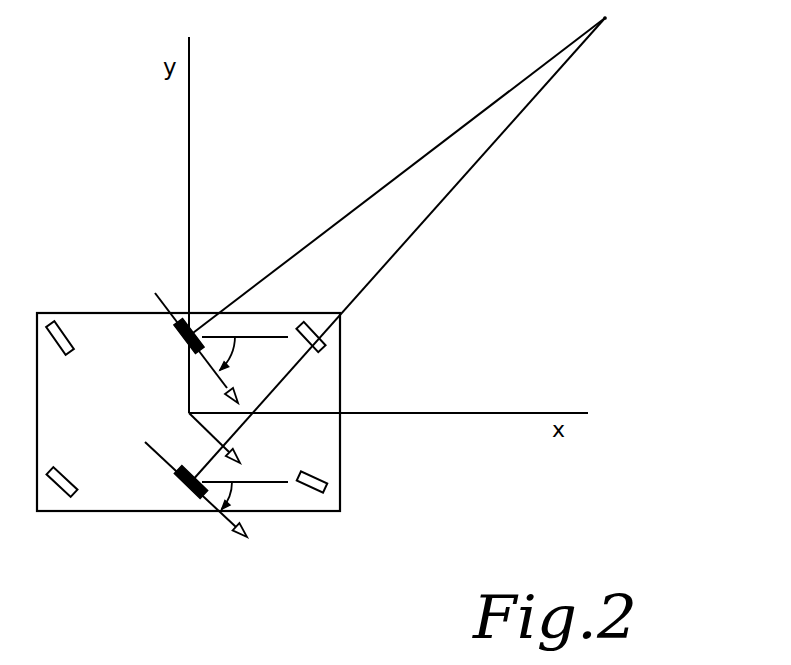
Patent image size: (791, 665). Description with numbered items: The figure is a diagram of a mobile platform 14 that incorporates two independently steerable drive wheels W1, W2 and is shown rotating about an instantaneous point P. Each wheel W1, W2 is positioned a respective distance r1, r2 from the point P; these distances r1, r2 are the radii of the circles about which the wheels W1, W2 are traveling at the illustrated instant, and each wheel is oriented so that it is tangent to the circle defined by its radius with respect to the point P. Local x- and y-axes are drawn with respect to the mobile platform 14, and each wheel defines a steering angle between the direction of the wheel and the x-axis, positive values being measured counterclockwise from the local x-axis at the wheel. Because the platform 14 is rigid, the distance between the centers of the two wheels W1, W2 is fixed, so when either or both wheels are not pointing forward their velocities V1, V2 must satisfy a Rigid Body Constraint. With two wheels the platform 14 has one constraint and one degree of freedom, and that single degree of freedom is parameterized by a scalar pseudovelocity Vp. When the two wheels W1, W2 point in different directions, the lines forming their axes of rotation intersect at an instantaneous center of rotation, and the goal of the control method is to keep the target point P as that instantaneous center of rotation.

The mobile platform 14 is at (126, 314).
The instantaneous point P is at (658, 17).
The radius of wheel W1 r1 is at (398, 250).
The radius of wheel W2 r2 is at (397, 177).
The steerable drive wheel W1 is at (183, 489).
The steerable drive wheel W2 is at (180, 342).
The velocity of wheel W1 V1 is at (223, 515).
The velocity of wheel W2 V2 is at (215, 383).
The pseudovelocity Vp is at (207, 437).